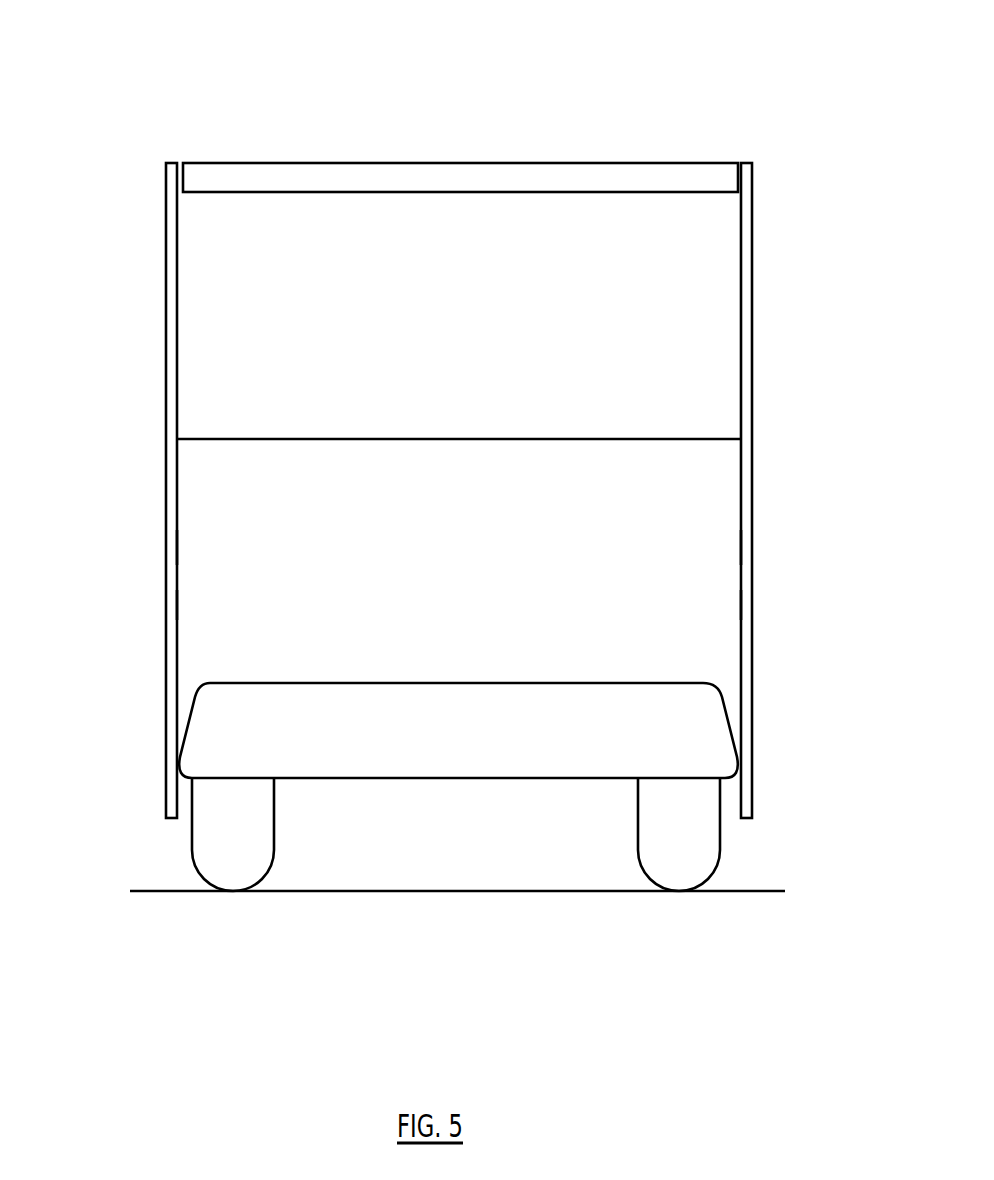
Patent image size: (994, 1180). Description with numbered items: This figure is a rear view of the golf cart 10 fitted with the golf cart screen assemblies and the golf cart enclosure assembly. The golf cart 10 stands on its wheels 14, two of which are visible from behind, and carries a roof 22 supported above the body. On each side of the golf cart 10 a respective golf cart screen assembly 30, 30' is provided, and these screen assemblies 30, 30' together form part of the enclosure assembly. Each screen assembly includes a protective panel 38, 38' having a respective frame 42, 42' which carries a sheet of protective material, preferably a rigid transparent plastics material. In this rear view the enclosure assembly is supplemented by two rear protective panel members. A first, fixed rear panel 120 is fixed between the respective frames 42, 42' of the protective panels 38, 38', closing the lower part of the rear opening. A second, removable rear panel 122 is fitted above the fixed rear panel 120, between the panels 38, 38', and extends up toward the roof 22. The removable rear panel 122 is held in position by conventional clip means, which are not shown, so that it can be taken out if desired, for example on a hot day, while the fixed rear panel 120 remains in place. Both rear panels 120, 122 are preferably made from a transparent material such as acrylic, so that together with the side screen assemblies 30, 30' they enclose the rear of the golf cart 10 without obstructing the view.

The golf cart 10 is at (471, 510).
The wheels 14 is at (231, 862).
The roof 22 is at (383, 173).
The golf cart screen assembly 30 is at (823, 490).
The golf cart screen assembly 30' is at (107, 490).
The protective panel 38 is at (819, 603).
The protective panel 38' is at (107, 600).
The frame 42 is at (819, 548).
The frame 42' is at (107, 545).
The fixed rear panel 120 is at (449, 592).
The removable rear panel 122 is at (455, 328).